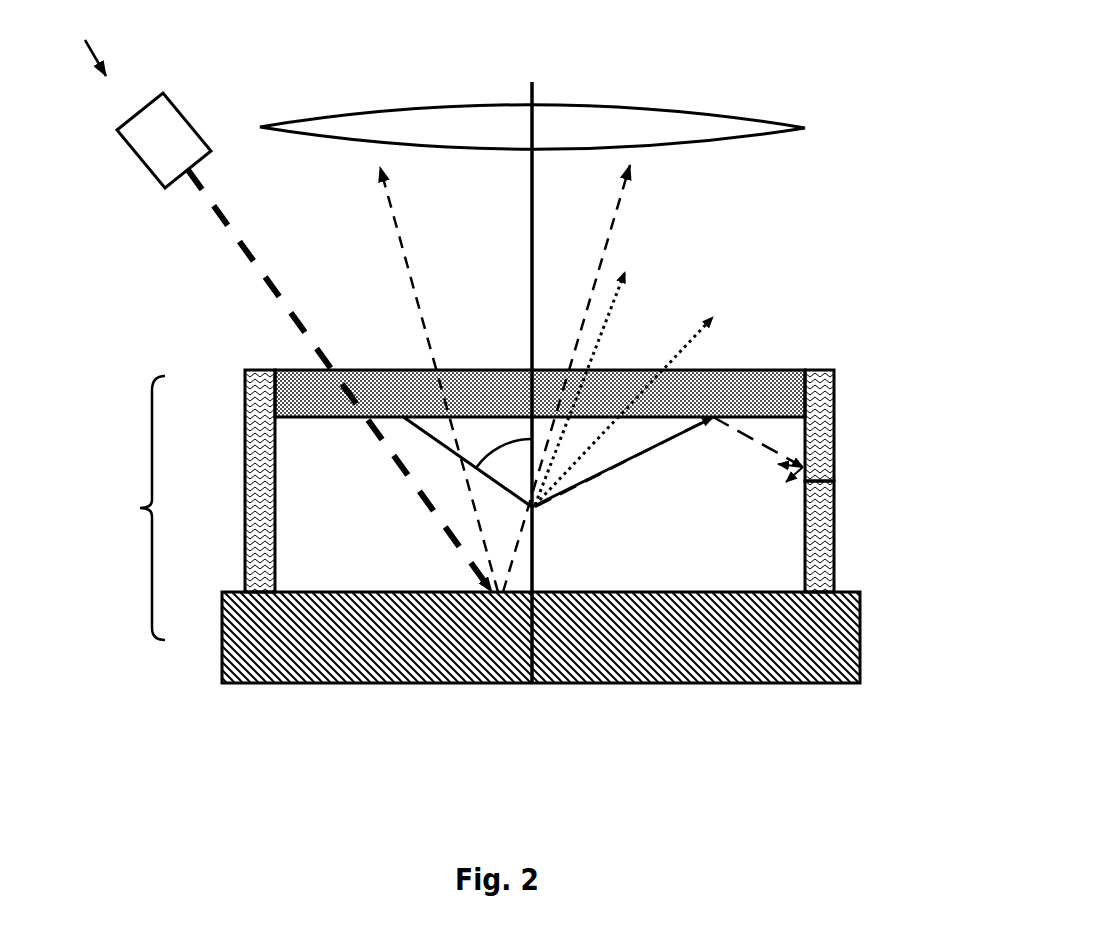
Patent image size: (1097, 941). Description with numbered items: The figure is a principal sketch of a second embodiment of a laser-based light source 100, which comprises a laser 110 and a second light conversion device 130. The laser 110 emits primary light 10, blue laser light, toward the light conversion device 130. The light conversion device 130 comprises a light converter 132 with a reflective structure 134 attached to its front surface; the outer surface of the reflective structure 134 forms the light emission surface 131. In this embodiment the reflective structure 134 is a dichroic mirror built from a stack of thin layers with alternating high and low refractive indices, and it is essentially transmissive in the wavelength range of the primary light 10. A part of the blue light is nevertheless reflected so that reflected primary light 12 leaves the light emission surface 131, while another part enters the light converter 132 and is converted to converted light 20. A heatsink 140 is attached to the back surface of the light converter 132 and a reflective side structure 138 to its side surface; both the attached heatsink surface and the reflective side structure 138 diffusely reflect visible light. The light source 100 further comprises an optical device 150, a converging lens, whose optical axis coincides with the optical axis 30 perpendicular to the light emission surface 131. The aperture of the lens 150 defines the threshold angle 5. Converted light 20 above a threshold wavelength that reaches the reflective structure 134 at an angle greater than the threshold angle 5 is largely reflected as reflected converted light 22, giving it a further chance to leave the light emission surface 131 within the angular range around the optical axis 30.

The laser-based light source 100 is at (84, 43).
The laser 110 is at (127, 147).
The primary light 10 is at (243, 242).
The optical axis 30 is at (533, 84).
The optical device 150 is at (806, 129).
The reflected primary light 12 is at (616, 222).
The converted light 20 is at (617, 303).
The light emission surface 131 is at (750, 373).
The reflective structure 134 is at (807, 397).
The light converter 132 is at (807, 445).
The reflected converted light 22 is at (650, 448).
The threshold angle 5 is at (507, 470).
The reflective side structure 138 is at (247, 508).
The light conversion device 130 is at (128, 508).
The heatsink 140 is at (859, 630).